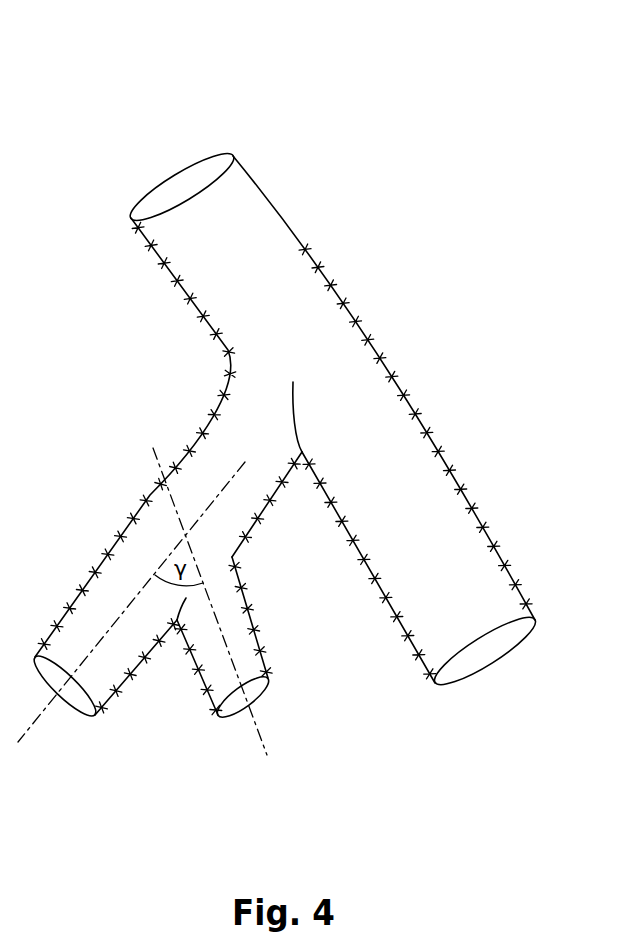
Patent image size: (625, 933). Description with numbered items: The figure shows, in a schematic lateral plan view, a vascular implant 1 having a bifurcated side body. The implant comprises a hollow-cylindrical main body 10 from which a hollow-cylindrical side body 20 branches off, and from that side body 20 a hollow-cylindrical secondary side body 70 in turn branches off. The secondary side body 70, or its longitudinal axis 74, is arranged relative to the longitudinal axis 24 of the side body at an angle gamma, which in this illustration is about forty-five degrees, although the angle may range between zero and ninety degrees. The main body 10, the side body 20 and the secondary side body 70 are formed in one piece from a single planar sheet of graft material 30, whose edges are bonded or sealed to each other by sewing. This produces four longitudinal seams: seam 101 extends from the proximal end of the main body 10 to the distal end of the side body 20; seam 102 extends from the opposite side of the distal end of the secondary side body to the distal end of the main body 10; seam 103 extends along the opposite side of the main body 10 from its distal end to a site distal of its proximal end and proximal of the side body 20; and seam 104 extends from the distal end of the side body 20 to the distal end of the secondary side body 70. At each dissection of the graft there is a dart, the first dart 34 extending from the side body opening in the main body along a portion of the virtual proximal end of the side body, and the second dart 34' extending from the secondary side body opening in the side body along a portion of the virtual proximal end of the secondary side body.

The vascular implant 1 is at (359, 112).
The hollow-cylindrical main body 10 is at (306, 273).
The hollow-cylindrical side body 20 is at (107, 582).
The planar sheet of graft material 30 is at (474, 543).
The secondary side body 70 is at (248, 657).
The first dart 34 is at (364, 378).
The second dart 34' is at (253, 612).
The longitudinal axis of the side body 24 is at (18, 742).
The longitudinal axis of the second side body 74 is at (266, 742).
The longitudinal seam 101 is at (200, 303).
The longitudinal seam 102 is at (348, 545).
The longitudinal seam 103 is at (417, 398).
The longitudinal seam 104 is at (190, 673).